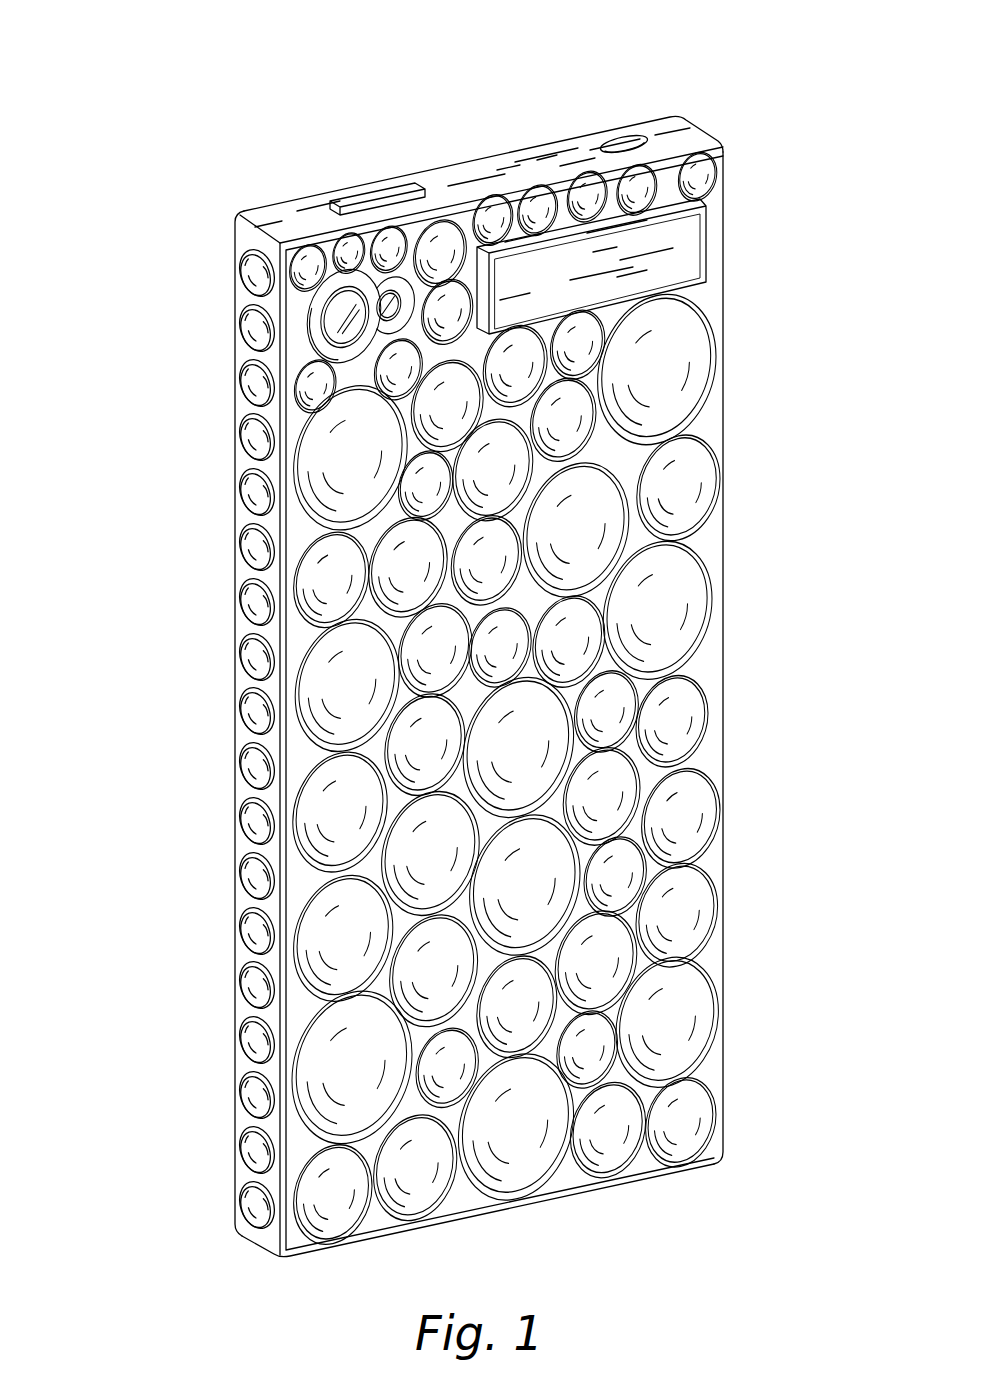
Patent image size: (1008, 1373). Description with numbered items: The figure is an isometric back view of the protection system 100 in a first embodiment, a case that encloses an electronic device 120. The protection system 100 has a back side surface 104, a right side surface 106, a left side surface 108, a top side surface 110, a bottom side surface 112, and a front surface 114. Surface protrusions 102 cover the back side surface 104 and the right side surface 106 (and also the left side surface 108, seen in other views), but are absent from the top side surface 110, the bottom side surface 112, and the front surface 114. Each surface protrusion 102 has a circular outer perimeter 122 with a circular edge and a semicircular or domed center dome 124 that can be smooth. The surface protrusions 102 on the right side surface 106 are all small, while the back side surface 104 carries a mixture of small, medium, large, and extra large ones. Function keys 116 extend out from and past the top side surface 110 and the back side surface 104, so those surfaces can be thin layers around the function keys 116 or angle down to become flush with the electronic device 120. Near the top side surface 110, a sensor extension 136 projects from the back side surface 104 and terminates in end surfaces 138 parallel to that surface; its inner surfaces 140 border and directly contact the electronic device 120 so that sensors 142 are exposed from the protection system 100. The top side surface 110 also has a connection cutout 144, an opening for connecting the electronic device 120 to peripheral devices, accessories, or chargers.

The protection system 100 is at (142, 68).
The surface protrusions 102 is at (714, 300).
The back side surface 104 is at (726, 226).
The right side surface 106 is at (236, 570).
The left side surface 108 is at (726, 542).
The top side surface 110 is at (546, 160).
The bottom side surface 112 is at (633, 1185).
The front surface 114 is at (236, 451).
The function keys 116 is at (555, 272).
The electronic device 120 is at (345, 317).
The outer perimeter 122 is at (656, 368).
The center dome 124 is at (657, 370).
The sensor extension 136 is at (360, 312).
The end surfaces 138 is at (324, 334).
The inner surfaces 140 is at (389, 305).
The sensors 142 is at (344, 316).
The connection cutout 144 is at (630, 137).